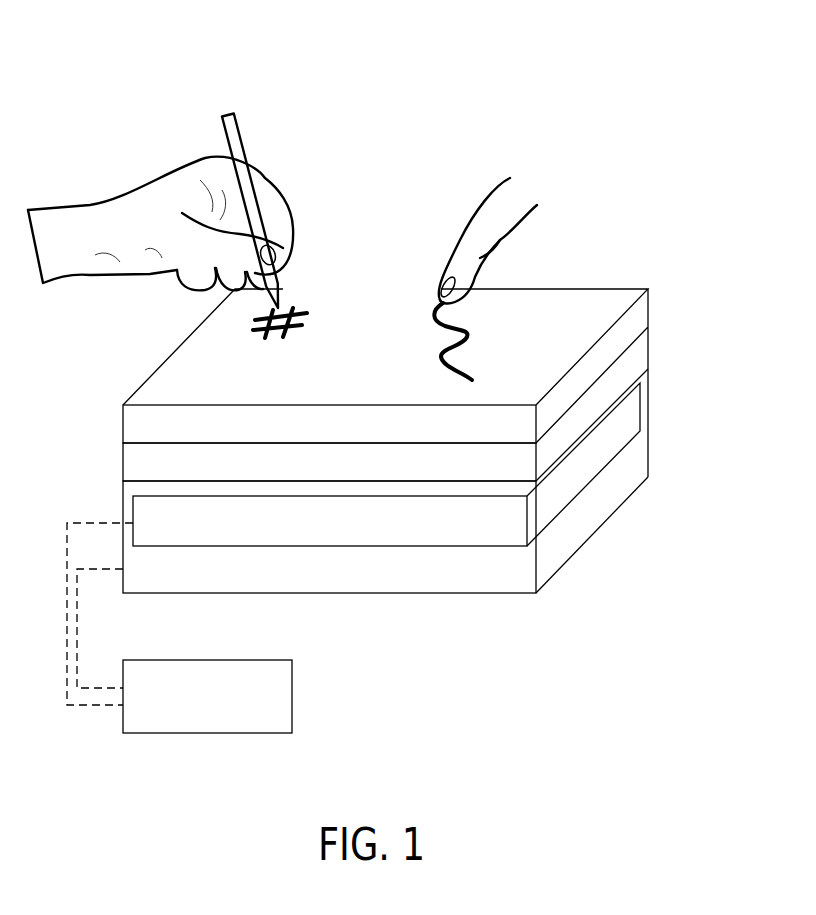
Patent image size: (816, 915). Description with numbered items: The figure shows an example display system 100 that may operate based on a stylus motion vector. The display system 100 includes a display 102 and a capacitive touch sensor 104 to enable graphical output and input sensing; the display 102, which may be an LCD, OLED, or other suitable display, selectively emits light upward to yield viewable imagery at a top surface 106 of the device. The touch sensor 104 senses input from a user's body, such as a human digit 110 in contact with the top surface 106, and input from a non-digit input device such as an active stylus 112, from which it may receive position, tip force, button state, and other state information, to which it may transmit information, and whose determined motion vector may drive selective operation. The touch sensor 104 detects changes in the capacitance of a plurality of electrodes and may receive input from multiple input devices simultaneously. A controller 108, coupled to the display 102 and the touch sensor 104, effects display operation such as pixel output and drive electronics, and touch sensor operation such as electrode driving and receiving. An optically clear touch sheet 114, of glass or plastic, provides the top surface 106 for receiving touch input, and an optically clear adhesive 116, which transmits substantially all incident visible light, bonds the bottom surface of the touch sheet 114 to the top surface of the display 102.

The display system 100 is at (393, 55).
The display 102 is at (392, 582).
The capacitive touch sensor 104 is at (432, 534).
The top surface 106 is at (610, 303).
The controller 108 is at (222, 722).
The human digit 110 is at (488, 195).
The active stylus 112 is at (243, 132).
The optically clear touch sheet 114 is at (422, 436).
The optically clear adhesive (OCA) 116 is at (383, 474).